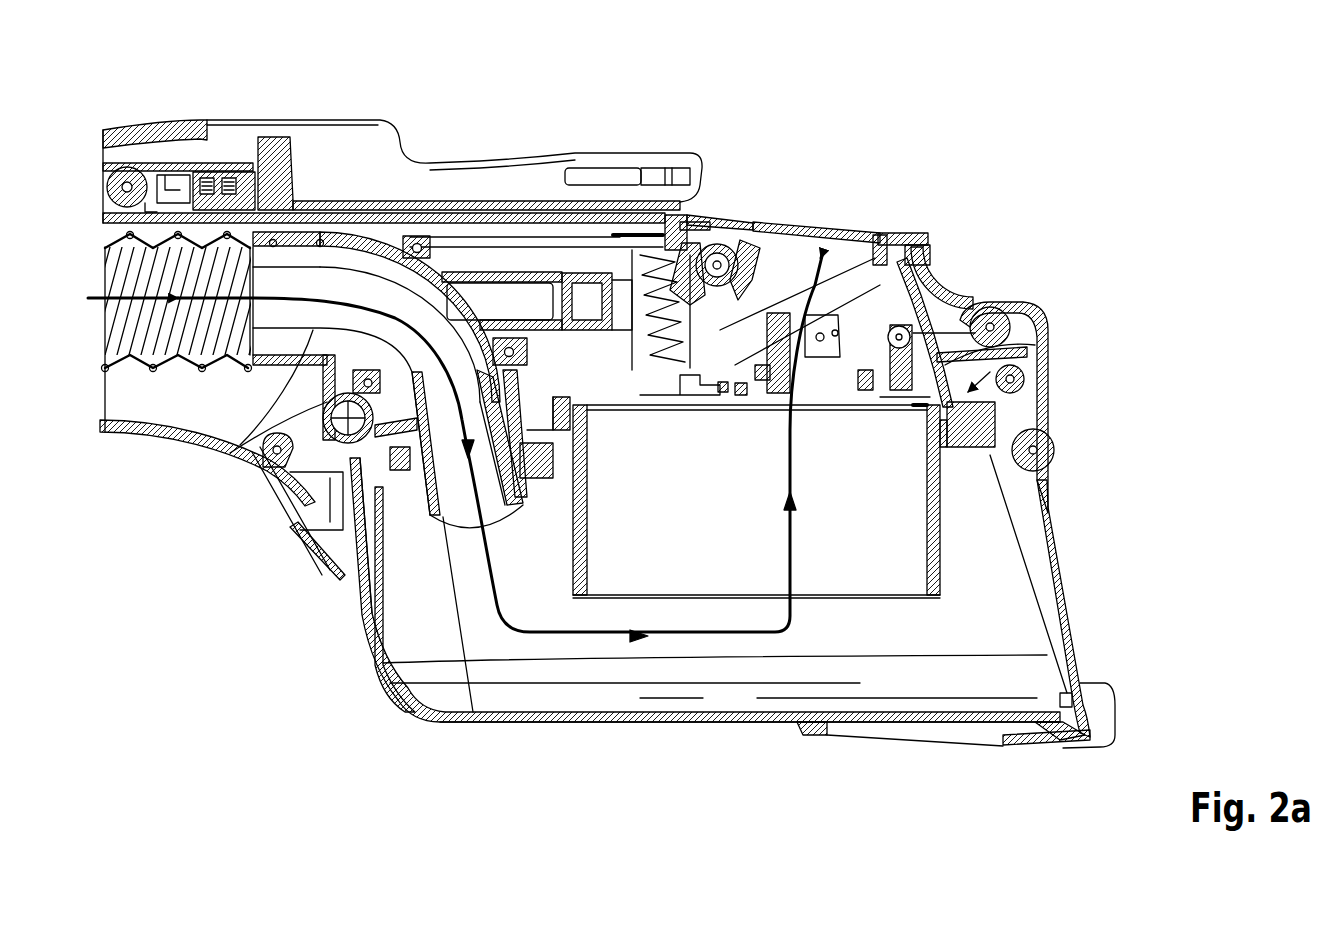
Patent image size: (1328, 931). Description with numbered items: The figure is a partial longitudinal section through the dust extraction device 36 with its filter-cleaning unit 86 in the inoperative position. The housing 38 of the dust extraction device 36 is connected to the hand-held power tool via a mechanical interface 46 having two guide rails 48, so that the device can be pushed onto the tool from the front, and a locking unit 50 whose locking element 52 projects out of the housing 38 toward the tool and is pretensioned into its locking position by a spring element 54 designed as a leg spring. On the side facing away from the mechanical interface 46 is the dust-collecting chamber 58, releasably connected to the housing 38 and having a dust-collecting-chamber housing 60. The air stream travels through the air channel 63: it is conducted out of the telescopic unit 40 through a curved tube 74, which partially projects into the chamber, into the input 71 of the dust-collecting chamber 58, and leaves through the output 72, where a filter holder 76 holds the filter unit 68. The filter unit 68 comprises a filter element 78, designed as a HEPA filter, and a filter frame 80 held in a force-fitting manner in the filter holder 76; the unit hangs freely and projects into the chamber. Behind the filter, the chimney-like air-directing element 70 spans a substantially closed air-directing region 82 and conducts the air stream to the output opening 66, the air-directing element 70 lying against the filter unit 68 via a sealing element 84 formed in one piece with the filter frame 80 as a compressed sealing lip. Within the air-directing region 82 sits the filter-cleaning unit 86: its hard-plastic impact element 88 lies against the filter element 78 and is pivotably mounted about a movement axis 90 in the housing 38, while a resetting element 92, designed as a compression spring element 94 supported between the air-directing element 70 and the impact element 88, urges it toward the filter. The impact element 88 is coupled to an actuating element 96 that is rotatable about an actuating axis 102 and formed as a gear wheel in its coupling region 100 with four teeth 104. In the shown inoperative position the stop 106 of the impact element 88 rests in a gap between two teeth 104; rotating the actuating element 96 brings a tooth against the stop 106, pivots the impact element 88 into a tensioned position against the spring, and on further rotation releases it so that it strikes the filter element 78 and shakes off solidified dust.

The dust extraction device 36 is at (947, 150).
The housing 38 is at (270, 472).
The telescopic unit 40 is at (153, 380).
The mechanical interface 46 is at (458, 112).
The guide rails 48 is at (623, 165).
The locking unit 50 is at (235, 148).
The locking element 52 is at (279, 150).
The spring element 54 is at (216, 178).
The dust-collecting chamber 58 is at (352, 712).
The dust-collecting-chamber housing 60 is at (533, 724).
The air channel 63 is at (377, 297).
The output opening 66 is at (900, 230).
The filter unit 68 is at (1040, 362).
The air-directing element 70 is at (962, 322).
The input 71 is at (418, 523).
The output 72 is at (1040, 378).
The curved tube 74 is at (340, 557).
The filter holder 76 is at (1045, 428).
The filter element 78 is at (905, 503).
The filter frame 80 is at (1045, 403).
The air-directing region 82 is at (727, 305).
The sealing element 84 is at (560, 385).
The filter-cleaning unit 86 is at (803, 285).
The impact element 88 is at (787, 305).
The movement axis 90 is at (938, 310).
The resetting element 92 is at (683, 245).
The spring element 94 is at (661, 310).
The actuating element 96 is at (853, 275).
The coupling region 100 is at (827, 255).
The actuating axis 102 is at (915, 242).
The teeth 104 is at (790, 360).
The stop 106 is at (760, 405).